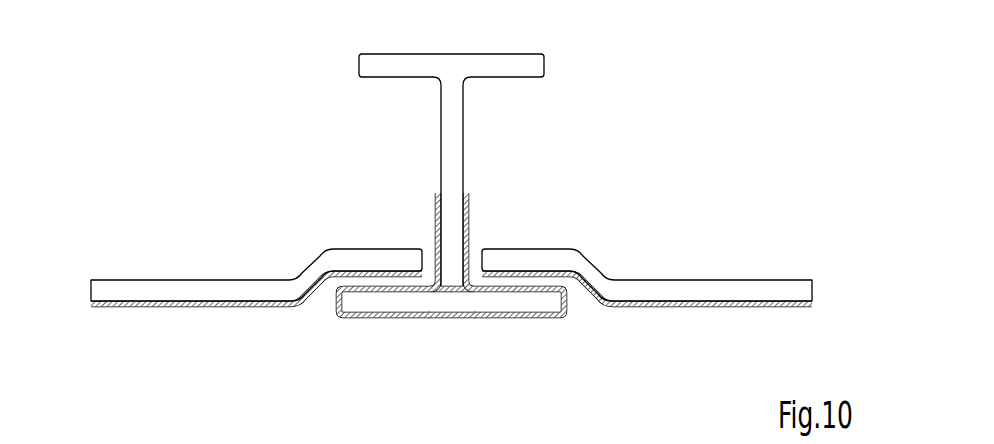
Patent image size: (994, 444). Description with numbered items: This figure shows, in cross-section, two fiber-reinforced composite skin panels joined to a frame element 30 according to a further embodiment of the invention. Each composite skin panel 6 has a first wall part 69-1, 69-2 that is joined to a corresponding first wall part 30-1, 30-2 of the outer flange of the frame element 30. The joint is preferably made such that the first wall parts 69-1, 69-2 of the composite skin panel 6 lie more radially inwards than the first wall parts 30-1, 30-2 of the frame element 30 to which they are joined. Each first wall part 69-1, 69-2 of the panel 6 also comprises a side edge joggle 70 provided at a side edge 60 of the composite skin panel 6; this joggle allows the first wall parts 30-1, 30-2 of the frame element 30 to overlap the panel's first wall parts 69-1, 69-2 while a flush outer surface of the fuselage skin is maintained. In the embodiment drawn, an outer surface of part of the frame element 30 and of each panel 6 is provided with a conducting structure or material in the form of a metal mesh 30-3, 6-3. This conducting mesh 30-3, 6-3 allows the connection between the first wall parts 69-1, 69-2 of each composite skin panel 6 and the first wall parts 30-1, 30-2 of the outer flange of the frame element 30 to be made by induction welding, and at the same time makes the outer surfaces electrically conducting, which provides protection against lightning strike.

The frame element 30 is at (350, 58).
The first wall part of outer flange of frame element 30-1 is at (527, 302).
The first wall part of outer flange of frame element 30-2 is at (382, 297).
The metal mesh 30-3 is at (453, 318).
The side edge 60 is at (413, 263).
The composite skin panel 6 is at (451, 276).
The metal mesh 6-3 is at (226, 307).
The first wall part of composite skin panel 69-1 is at (545, 255).
The first wall part of composite skin panel 69-2 is at (363, 255).
The side edge joggle 70 is at (325, 293).